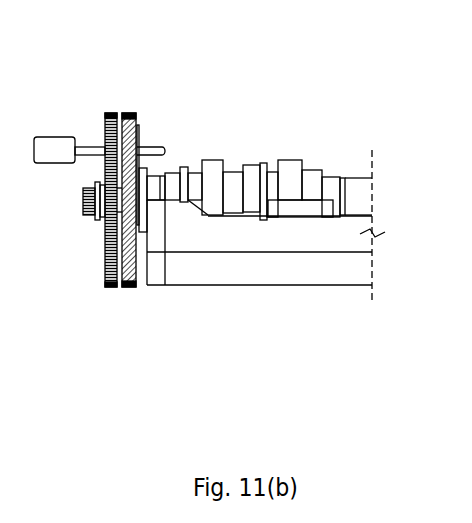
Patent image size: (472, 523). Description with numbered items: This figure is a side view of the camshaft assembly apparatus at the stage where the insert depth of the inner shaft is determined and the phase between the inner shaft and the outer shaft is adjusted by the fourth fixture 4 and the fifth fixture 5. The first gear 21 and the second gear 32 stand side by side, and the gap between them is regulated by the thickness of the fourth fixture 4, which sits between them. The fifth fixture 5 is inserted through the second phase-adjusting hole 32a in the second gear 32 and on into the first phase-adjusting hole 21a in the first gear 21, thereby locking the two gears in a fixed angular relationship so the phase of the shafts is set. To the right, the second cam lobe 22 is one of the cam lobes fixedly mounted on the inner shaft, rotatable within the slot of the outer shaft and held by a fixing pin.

The fifth fixture 5 is at (52, 124).
The second phase-adjusting hole 32a is at (104, 150).
The second gear 32 is at (109, 113).
The first gear 21 is at (131, 288).
The first phase-adjusting hole 21a is at (136, 148).
The fourth fixture 4 is at (119, 288).
The second cam lobe 22 is at (293, 160).